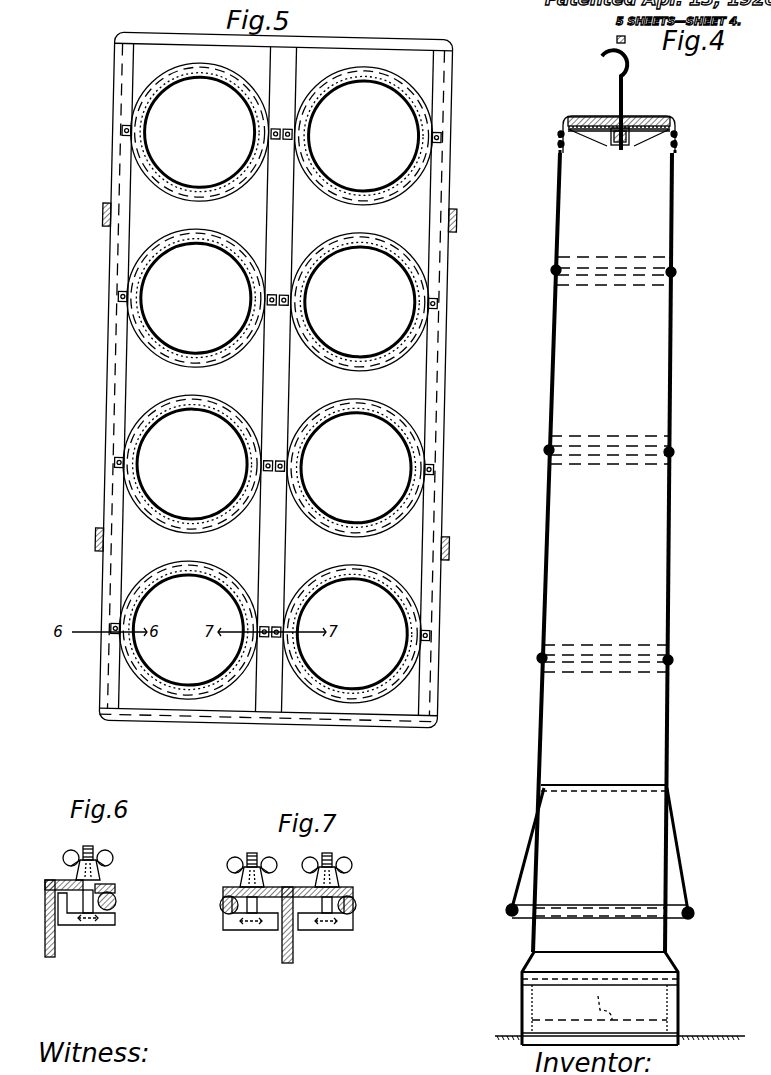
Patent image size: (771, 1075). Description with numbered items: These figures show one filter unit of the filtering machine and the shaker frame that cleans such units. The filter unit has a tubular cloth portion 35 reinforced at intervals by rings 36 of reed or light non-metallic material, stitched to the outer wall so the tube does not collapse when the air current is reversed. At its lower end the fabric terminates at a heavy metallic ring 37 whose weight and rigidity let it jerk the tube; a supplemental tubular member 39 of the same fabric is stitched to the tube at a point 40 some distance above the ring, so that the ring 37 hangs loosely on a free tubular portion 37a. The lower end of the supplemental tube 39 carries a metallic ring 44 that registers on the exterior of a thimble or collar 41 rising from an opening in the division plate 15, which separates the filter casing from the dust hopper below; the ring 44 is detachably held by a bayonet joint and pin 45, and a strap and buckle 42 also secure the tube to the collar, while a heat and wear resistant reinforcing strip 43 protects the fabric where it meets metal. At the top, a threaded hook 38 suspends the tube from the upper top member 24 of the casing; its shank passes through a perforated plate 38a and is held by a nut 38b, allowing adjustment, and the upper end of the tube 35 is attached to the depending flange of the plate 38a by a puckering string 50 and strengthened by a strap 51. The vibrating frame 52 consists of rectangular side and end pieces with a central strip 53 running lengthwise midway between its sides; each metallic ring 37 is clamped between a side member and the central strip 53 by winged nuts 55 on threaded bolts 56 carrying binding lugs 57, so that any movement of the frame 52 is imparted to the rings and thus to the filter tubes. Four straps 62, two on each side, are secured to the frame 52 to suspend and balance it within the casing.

In FIG. 4, the division plate 15 is at (726, 1035).
In FIG. 4, the upper top member of the filter casing 24 is at (605, 46).
In FIG. 5, the tubular portion of the filter unit 35 is at (194, 184).
In FIG. 4, the tubular portion of the filter unit 35 is at (556, 325).
In FIG. 4, the reinforcing rings 36 is at (551, 268).
In FIG. 4, the metallic ring 37 is at (509, 907).
In FIG. 6, the metallic ring 37 is at (115, 904).
In FIG. 7, the metallic ring 37 is at (220, 905).
In FIG. 4, the free tubular portion 37a is at (527, 843).
In FIG. 4, the hook 38 is at (630, 66).
In FIG. 4, the plate 38a is at (604, 115).
In FIG. 4, the nut 38b is at (624, 148).
In FIG. 4, the supplemental tubular member 39 is at (664, 866).
In FIG. 4, the stitching 40 is at (596, 790).
In FIG. 4, the thimble or collar 41 is at (670, 1025).
In FIG. 4, the strap and buckle 42 is at (681, 986).
In FIG. 4, the reinforcing strip 43 is at (666, 962).
In FIG. 4, the metallic ring 44 is at (530, 1005).
In FIG. 4, the bayonet joint and pin 45 is at (612, 996).
In FIG. 4, the puckering string 50 is at (655, 123).
In FIG. 4, the strap 51 is at (675, 140).
In FIG. 5, the vibrating frame 52 is at (118, 172).
In FIG. 6, the vibrating frame 52 is at (46, 906).
In FIG. 5, the central strip 53 is at (287, 232).
In FIG. 7, the central strip 53 is at (288, 886).
In FIG. 5, the winged nut 55 is at (120, 128).
In FIG. 6, the winged nut 55 is at (112, 855).
In FIG. 7, the winged nut 55 is at (233, 862).
In FIG. 6, the threaded bolt 56 is at (82, 844).
In FIG. 7, the threaded bolt 56 is at (332, 850).
In FIG. 6, the binding lug 57 is at (67, 926).
In FIG. 7, the binding lug 57 is at (230, 931).
In FIG. 5, the strap 62 is at (103, 217).